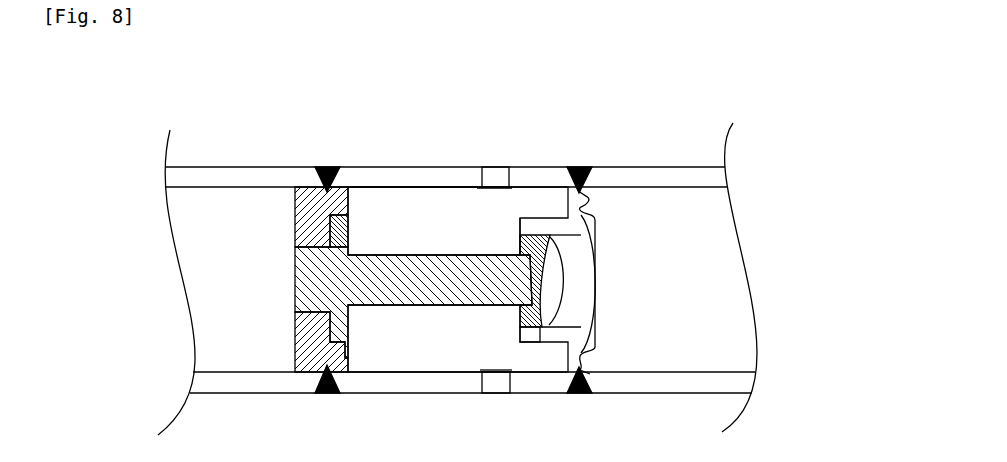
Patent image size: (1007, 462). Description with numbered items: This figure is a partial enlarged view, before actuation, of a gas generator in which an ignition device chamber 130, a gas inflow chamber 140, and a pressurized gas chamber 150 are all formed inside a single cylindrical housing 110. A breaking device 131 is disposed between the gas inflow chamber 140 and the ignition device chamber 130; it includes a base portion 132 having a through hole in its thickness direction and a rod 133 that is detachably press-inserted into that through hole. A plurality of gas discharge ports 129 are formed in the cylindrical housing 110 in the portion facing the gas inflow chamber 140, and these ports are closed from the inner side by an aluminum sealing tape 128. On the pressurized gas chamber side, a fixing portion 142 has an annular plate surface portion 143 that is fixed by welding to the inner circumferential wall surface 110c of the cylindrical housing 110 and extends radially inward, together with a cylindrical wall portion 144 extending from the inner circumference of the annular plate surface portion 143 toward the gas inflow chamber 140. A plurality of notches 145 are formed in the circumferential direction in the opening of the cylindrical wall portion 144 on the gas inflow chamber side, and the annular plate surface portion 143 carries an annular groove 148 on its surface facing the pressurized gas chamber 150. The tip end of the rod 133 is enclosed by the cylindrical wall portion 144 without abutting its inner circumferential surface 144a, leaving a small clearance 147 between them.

The cylindrical housing 110 is at (238, 181).
The inner circumferential wall surface 110c is at (378, 193).
The aluminum sealing tape 128 is at (488, 197).
The gas discharge ports 129 is at (497, 178).
The ignition device chamber 130 is at (258, 247).
The breaking device 131 is at (413, 243).
The base portion 132 is at (347, 358).
The rod 133 is at (375, 291).
The gas inflow chamber 140 is at (433, 234).
The inner circumferential surface 144a is at (521, 238).
The fixing portion 142 is at (626, 268).
The annular plate surface portion 143 is at (592, 196).
The cylindrical wall portion 144 is at (548, 224).
The notches 145 is at (530, 333).
The space 147 is at (565, 303).
The annular groove 148 is at (600, 356).
The pressurized gas chamber 150 is at (713, 321).